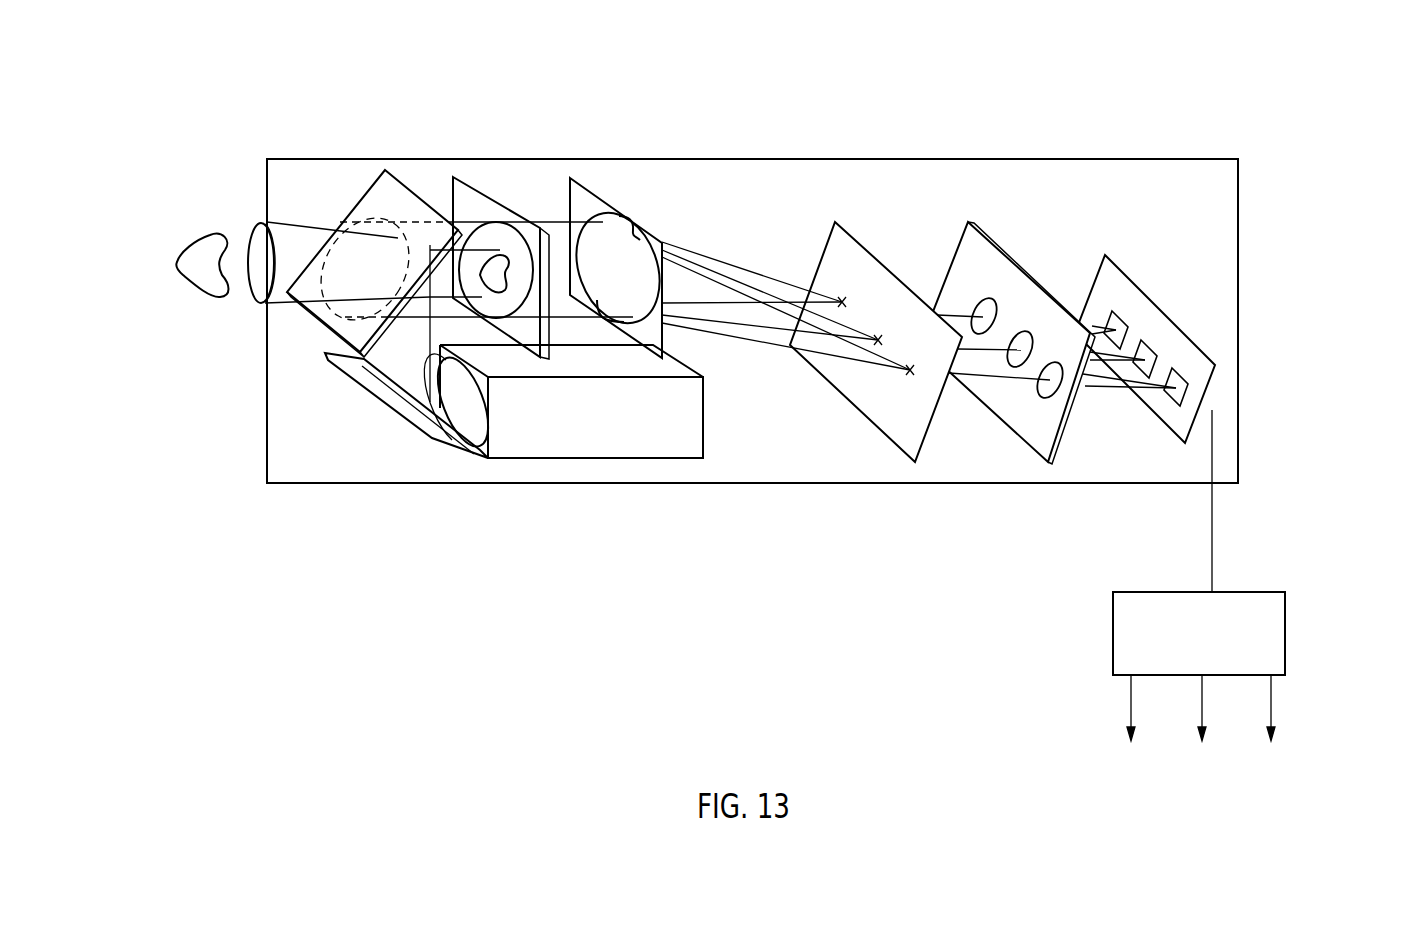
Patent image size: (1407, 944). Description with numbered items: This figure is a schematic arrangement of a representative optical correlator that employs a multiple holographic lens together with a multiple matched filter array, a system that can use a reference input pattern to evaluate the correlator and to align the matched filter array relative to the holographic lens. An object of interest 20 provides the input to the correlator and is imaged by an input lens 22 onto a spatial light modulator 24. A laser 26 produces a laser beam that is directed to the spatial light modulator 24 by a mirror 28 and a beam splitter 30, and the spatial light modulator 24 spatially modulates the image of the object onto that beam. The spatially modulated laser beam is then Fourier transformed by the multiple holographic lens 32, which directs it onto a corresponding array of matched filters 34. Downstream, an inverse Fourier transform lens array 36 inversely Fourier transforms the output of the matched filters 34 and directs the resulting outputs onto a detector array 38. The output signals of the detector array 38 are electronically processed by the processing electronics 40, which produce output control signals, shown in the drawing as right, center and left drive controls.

The object of interest 20 is at (187, 252).
The input lens 22 is at (265, 222).
The spatial light modulator 24 is at (462, 177).
The laser 26 is at (648, 431).
The mirror 28 is at (383, 407).
The beam splitter 30 is at (350, 208).
The multiple holographic lens 32 is at (573, 178).
The array of matched filters 34 is at (850, 235).
The inverse Fourier transform lens array 36 is at (990, 239).
The detector array 38 is at (1160, 420).
The processing electronics 40 is at (1213, 667).